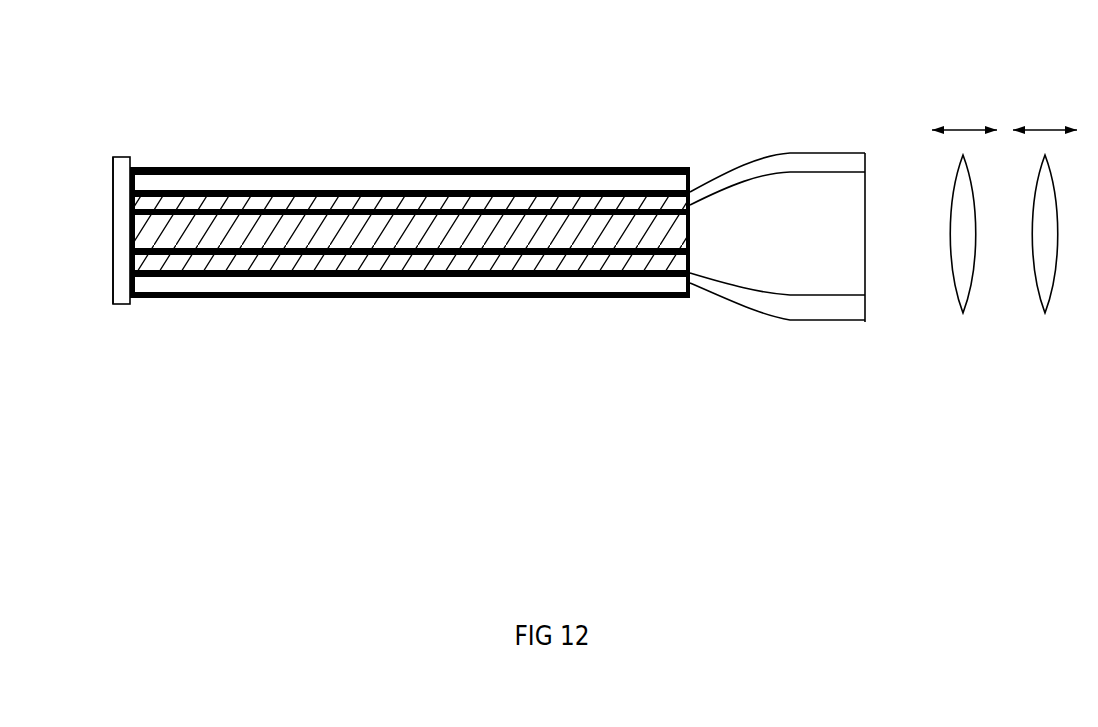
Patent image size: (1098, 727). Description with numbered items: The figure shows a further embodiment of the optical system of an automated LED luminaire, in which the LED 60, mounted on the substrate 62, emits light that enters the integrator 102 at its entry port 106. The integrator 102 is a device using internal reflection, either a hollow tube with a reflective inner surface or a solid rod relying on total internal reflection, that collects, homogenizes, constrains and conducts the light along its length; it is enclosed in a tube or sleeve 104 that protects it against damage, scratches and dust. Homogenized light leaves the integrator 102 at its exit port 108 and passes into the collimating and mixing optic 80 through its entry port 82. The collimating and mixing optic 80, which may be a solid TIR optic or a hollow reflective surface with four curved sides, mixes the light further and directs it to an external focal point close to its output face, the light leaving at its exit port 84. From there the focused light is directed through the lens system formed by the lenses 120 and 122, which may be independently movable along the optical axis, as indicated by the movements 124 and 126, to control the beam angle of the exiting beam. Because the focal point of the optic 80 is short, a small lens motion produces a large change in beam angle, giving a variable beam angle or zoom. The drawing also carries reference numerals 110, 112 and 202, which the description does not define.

The LED 60 is at (150, 236).
The substrate 62 is at (130, 204).
The collimating and mixing optic 80 is at (829, 190).
The entry port 82 is at (693, 195).
The exit port 84 is at (865, 282).
The integrator 102 is at (397, 167).
The tube or sleeve 104 is at (317, 182).
The entry port 106 is at (115, 190).
The exit port 108 is at (671, 191).
The second layer 110 is at (542, 189).
The hatched layer 112 is at (457, 207).
The lens 120 is at (963, 313).
The lens 122 is at (1045, 313).
The movement 124 is at (963, 128).
The movement 126 is at (1047, 128).
The assembly 202 is at (634, 349).